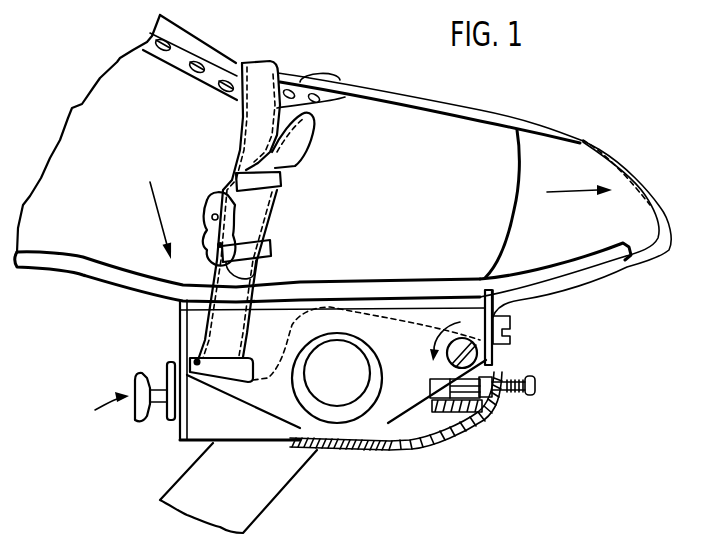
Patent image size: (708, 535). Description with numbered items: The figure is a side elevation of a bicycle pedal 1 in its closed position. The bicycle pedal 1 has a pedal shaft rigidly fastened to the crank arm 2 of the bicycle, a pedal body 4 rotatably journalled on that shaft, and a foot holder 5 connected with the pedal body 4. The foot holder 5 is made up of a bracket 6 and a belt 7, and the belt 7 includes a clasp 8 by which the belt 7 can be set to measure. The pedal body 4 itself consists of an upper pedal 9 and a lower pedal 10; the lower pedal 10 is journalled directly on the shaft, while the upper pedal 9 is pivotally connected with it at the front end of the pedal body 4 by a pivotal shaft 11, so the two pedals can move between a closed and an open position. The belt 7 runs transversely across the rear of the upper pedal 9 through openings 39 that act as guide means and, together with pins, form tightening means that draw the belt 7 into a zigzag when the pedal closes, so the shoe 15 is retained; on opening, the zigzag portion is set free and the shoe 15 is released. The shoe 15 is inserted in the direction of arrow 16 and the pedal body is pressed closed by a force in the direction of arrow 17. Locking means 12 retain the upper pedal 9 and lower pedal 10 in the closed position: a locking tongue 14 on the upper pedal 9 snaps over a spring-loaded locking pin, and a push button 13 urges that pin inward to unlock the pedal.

The bicycle pedal 1 is at (468, 440).
The crank arm 2 is at (283, 470).
The pedal body 4 is at (172, 444).
The foot holder 5 is at (499, 111).
The bracket 6 is at (656, 207).
The belt 7 is at (252, 107).
The clasp 8 is at (215, 197).
The upper pedal 9 is at (198, 320).
The lower pedal 10 is at (202, 432).
The pivotal shaft 11 is at (474, 352).
The locking means 12 is at (105, 396).
The push button 13 is at (134, 385).
The locking tongue 14 is at (170, 365).
The shoe 15 is at (100, 107).
The arrow 16 is at (570, 189).
The arrow 17 is at (155, 200).
The openings 39 is at (253, 362).